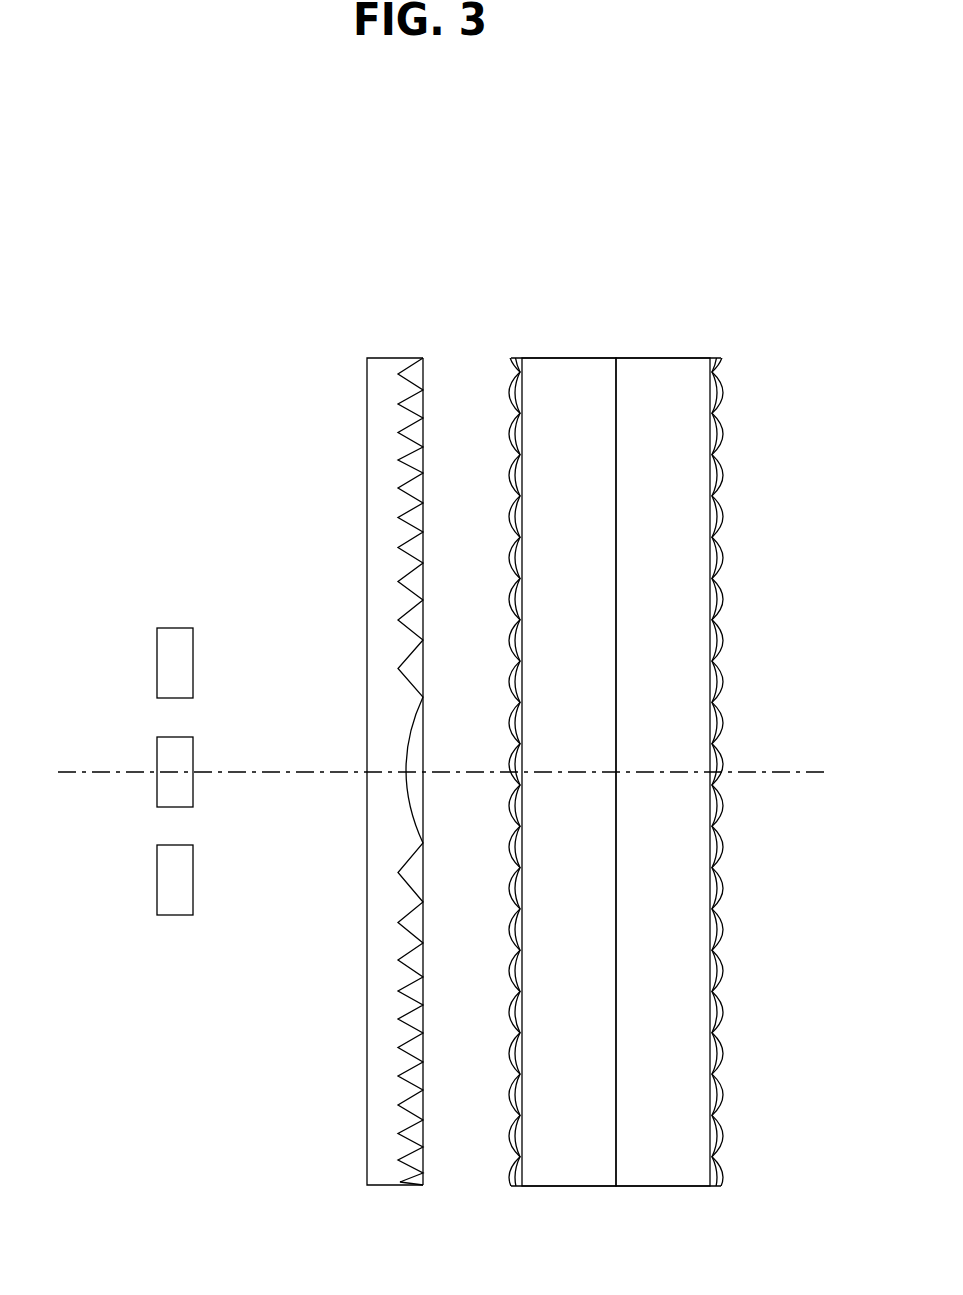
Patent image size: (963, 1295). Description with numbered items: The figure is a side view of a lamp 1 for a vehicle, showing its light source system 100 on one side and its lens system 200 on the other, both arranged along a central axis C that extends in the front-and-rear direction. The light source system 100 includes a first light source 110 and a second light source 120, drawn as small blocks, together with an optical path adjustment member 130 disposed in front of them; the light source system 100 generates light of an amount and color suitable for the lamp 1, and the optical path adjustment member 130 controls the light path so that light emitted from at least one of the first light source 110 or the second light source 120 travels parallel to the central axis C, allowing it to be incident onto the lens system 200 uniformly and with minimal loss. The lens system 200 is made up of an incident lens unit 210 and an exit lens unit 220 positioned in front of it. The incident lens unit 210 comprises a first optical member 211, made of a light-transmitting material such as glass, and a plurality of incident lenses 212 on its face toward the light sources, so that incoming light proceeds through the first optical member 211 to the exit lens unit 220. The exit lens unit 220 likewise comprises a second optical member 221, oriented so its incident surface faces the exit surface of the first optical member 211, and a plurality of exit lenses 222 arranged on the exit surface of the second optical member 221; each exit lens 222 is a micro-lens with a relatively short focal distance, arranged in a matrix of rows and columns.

The lamp for a vehicle 1 is at (208, 300).
The light source system 100 is at (300, 1009).
The first light source 110 is at (187, 778).
The second light source 120 is at (167, 677).
The optical path adjustment member 130 is at (378, 892).
The lens system 200 is at (720, 222).
The incident lens unit 210 is at (478, 277).
The first optical member 211 is at (565, 368).
The plurality of incident lenses 212 is at (512, 388).
The exit lens unit 220 is at (685, 277).
The second optical member 221 is at (667, 368).
The plurality of exit lenses 222 is at (722, 388).
The central axis C is at (433, 773).